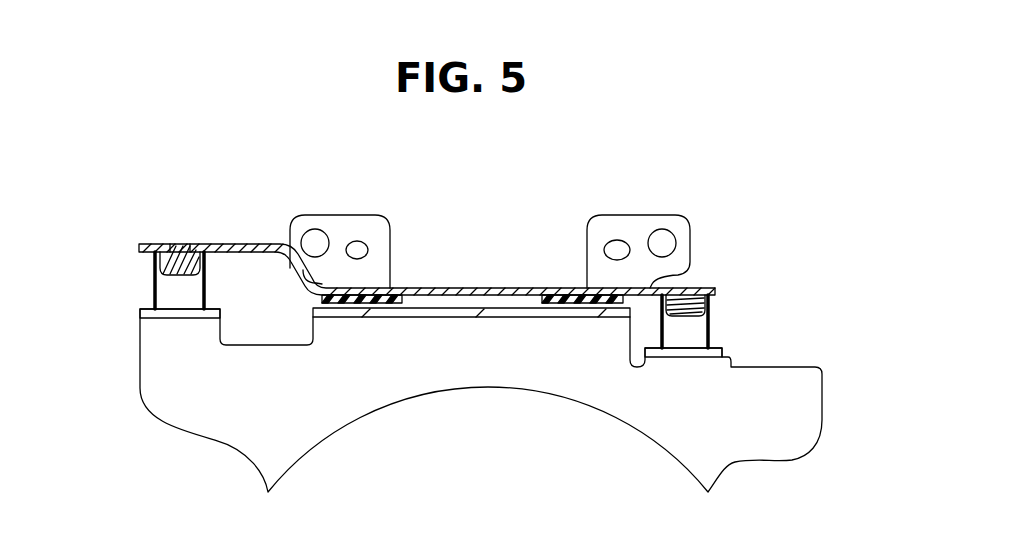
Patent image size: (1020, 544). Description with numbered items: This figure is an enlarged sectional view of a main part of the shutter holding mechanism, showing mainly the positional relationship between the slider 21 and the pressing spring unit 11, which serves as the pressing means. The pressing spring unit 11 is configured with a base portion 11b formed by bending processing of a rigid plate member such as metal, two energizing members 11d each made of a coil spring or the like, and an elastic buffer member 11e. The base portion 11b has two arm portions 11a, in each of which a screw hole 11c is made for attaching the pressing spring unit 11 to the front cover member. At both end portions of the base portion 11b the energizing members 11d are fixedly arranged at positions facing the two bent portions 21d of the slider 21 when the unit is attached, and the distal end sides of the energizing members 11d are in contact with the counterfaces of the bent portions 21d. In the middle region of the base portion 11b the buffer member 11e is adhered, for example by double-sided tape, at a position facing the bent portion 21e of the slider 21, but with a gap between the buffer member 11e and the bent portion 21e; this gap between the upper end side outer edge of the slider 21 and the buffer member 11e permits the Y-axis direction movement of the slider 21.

The pressing spring unit 11 is at (427, 242).
The arm portion 11a is at (370, 226).
The base portion 11b is at (263, 245).
The screw hole 11c is at (315, 243).
The energizing member 11d is at (153, 278).
The buffer member 11e is at (396, 295).
The slider 21 is at (482, 420).
The bent portion 21d is at (182, 309).
The bent portion 21e is at (462, 317).